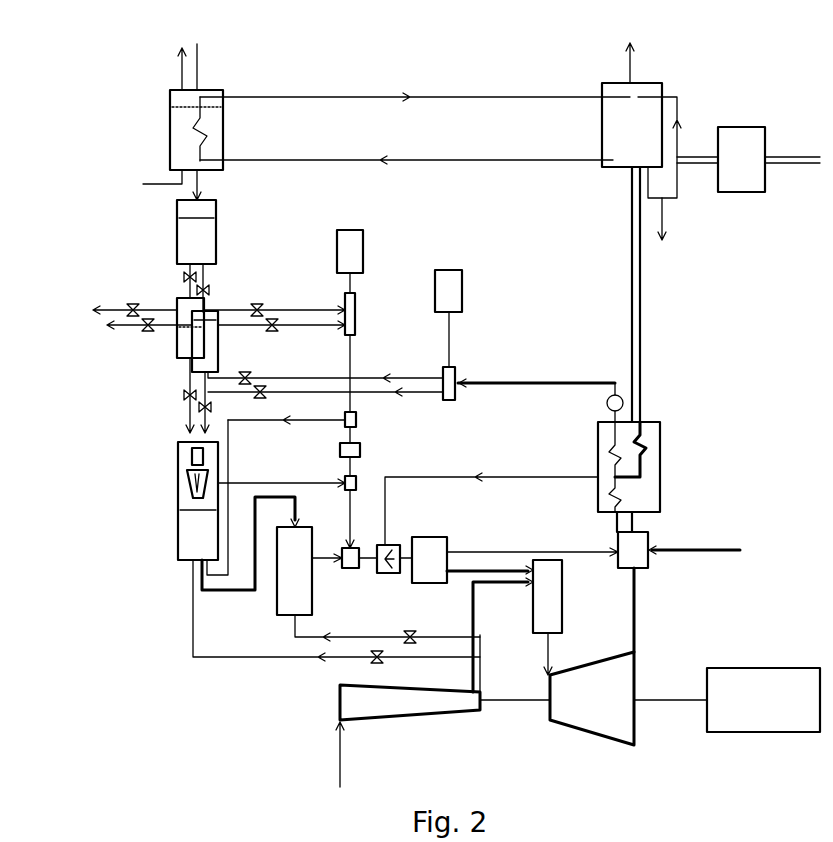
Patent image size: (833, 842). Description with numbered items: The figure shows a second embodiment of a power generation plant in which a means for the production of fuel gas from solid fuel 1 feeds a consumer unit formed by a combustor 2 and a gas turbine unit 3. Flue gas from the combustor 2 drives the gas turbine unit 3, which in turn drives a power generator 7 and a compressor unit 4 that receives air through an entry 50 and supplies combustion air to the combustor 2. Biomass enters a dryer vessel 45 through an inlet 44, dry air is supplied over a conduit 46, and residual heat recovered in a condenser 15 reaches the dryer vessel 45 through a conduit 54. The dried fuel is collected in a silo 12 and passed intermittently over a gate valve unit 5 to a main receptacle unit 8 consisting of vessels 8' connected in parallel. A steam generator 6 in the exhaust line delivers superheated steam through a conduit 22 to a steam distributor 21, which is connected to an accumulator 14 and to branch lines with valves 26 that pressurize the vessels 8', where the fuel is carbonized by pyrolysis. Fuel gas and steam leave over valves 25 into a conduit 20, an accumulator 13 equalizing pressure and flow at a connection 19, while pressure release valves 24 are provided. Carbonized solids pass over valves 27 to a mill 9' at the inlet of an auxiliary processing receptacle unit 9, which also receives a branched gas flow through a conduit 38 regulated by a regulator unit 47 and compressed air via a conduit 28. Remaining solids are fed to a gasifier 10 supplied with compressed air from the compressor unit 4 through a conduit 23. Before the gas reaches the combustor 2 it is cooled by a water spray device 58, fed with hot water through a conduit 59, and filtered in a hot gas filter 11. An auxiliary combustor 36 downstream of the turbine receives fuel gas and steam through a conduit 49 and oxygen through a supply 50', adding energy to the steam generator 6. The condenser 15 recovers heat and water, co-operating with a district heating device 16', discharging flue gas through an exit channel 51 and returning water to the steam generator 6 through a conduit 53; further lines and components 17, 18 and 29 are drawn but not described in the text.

The means for the production of fuel gas from solid fuel 1 is at (86, 598).
The combustor 2 is at (564, 598).
The gas turbine unit 3 is at (595, 738).
The compressor unit 4 is at (394, 722).
The gate valve unit 5 is at (164, 263).
The steam generator 6 is at (660, 477).
The power generator 7 is at (762, 735).
The main receptacle unit 8 is at (137, 341).
The vessels 8' is at (167, 336).
The auxiliary processing receptacle unit 9 is at (179, 501).
The mill 9' is at (174, 476).
The gasifier 10 is at (278, 590).
The hot gas filter 11 is at (430, 537).
The silo 12 is at (177, 218).
The accumulator 13 is at (348, 228).
The accumulator 14 is at (450, 266).
The condenser 15 is at (612, 172).
The district heating device 16' is at (748, 182).
The fuel line 17 is at (300, 318).
The control valve 18 is at (347, 570).
The connection 19 is at (356, 319).
The conduit 20 is at (352, 370).
The steam distributor 21 is at (456, 370).
The conduit 22 is at (543, 380).
The conduit for gasifier air feed 23 is at (360, 633).
The pressure release valves 24 is at (133, 303).
The valves 25 is at (272, 318).
The valves 26 is at (250, 372).
The valves 27 is at (200, 407).
The conduit 28 is at (272, 662).
The line 29 is at (298, 481).
The auxiliary combustor 36 is at (640, 570).
The conduit 38 is at (230, 440).
The inlet 44 is at (206, 78).
The dryer vessel 45 is at (170, 130).
The conduit 46 is at (178, 78).
The regulator unit 47 is at (360, 450).
The conduit 49 is at (508, 550).
The entry for air 50 is at (313, 754).
The oxygen supply 50' is at (694, 533).
The flue gas exit channel 51 is at (636, 72).
The conduit 53 is at (645, 407).
The conduit 54 is at (472, 157).
The water spray device 58 is at (390, 575).
The conduit 59 is at (532, 475).